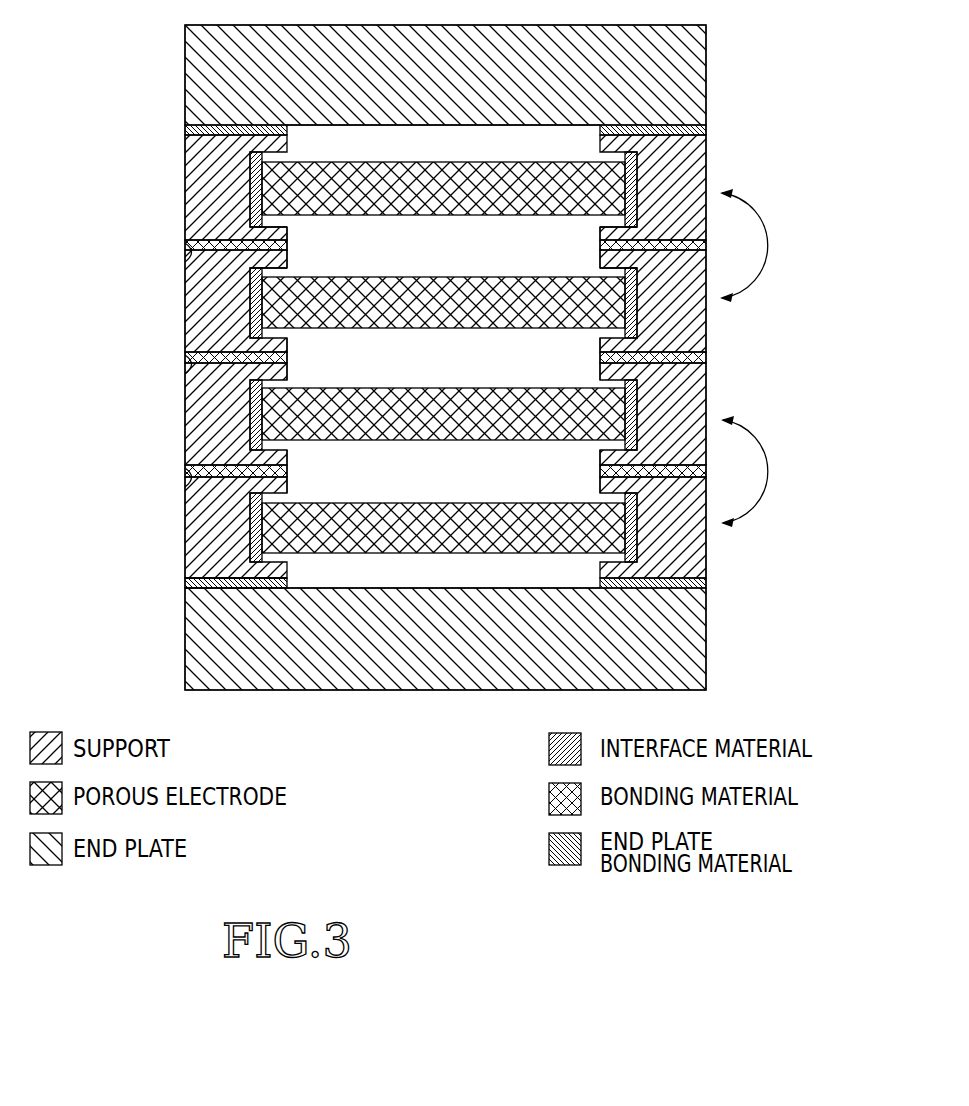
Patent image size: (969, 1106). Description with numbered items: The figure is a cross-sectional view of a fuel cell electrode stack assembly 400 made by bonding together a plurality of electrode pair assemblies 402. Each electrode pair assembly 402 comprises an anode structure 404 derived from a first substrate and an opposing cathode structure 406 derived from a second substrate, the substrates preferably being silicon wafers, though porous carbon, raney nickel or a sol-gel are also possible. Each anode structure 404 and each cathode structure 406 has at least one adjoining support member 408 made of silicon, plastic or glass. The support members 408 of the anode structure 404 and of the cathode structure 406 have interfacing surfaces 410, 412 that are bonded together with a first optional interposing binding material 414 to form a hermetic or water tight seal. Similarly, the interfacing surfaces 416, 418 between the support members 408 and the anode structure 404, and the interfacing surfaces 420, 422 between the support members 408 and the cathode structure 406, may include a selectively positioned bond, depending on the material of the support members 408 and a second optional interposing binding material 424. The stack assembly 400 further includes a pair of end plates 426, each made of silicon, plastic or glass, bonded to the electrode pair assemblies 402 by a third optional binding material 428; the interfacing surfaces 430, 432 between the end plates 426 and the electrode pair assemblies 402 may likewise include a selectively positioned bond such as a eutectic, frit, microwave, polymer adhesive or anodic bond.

The fuel cell electrode stack assembly 400 is at (797, 285).
The electrode pair assembly 402 is at (778, 237).
The anode structure 404 is at (450, 162).
The cathode structure 406 is at (467, 277).
The adjoining support member 408 is at (200, 180).
The interfacing surface 410 is at (188, 245).
The interfacing surface 412 is at (188, 258).
The first optional interposing binding material 414 is at (290, 250).
The interfacing surface 416 is at (288, 152).
The interfacing surface 418 is at (292, 130).
The interfacing surface 420 is at (290, 268).
The interfacing surface 422 is at (290, 262).
The second optional interposing binding material 424 is at (290, 558).
The end plate 426 is at (698, 91).
The third optional binding material 428 is at (703, 129).
The interfacing surface 430 is at (188, 573).
The interfacing surface 432 is at (190, 603).